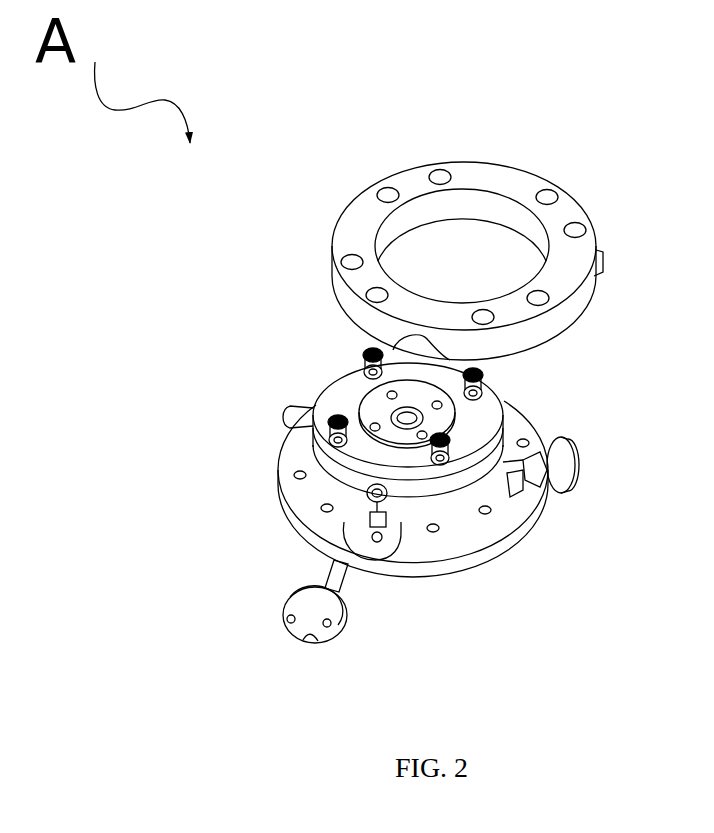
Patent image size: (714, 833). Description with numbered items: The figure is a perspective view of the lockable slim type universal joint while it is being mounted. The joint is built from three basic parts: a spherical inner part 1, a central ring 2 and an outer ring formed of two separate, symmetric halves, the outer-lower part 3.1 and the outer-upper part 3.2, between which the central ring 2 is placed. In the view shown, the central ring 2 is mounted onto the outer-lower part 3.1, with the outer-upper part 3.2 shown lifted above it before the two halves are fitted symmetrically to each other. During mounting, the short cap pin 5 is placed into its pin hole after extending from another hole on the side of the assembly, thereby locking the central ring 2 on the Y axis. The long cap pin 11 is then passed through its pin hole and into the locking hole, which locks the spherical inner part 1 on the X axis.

The inner part 1 is at (378, 410).
The central ring 2 is at (478, 421).
The outer-lower part 3.1 is at (484, 540).
The outer-upper part 3.2 is at (368, 209).
The short cap pin- 5 is at (565, 483).
The long cap pin- 11 is at (335, 597).